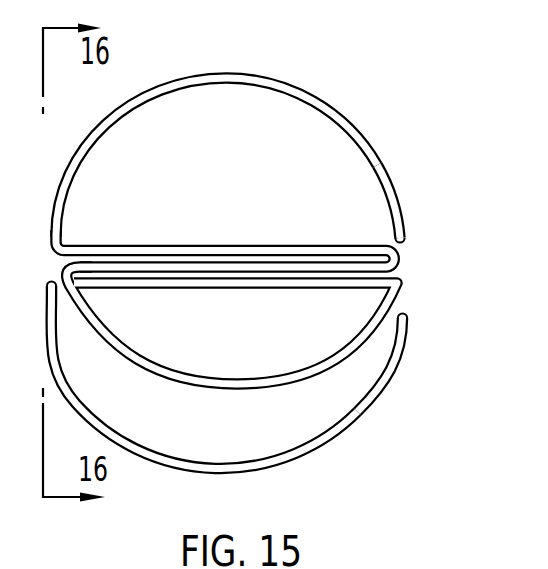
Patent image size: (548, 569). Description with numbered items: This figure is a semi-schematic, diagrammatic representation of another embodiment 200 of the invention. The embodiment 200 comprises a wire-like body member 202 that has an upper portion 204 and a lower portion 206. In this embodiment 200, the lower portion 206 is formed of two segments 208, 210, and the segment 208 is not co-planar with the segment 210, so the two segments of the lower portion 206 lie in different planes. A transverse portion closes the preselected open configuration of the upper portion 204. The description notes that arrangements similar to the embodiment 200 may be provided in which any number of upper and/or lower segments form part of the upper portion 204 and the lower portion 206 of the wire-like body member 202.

The embodiment 200 is at (460, 128).
The wire-like body member 202 is at (403, 221).
The upper portion 204 is at (320, 101).
The lower portion 206 is at (492, 349).
The segment 208 is at (342, 431).
The segment 210 is at (253, 389).